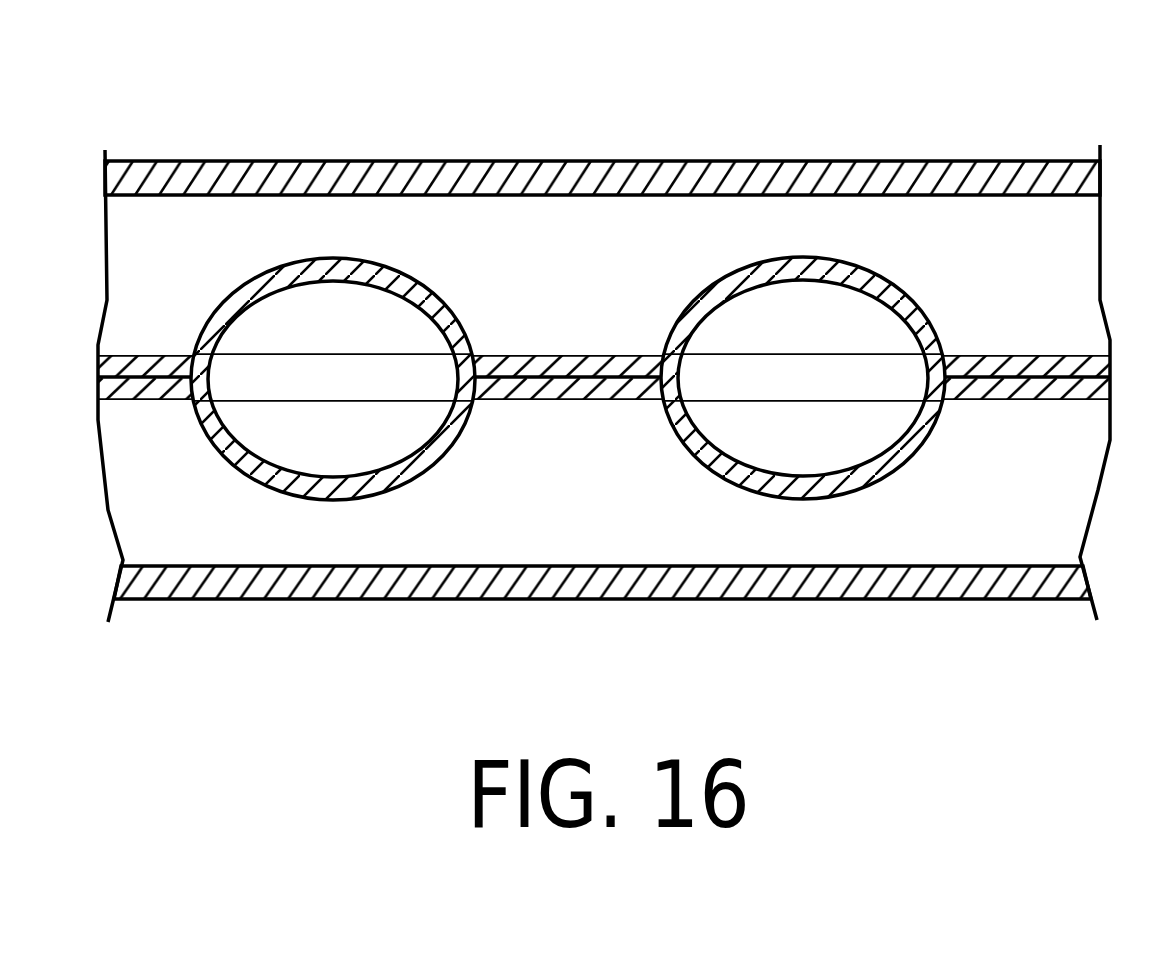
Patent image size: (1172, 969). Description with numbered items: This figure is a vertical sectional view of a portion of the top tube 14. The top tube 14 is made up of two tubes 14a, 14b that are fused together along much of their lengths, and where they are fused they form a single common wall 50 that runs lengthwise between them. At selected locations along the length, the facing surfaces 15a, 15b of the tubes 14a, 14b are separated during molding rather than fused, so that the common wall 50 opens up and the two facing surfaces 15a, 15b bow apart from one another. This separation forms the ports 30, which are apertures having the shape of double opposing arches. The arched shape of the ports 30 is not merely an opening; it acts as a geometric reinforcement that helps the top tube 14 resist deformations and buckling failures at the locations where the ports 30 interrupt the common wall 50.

The top tube 14 is at (968, 150).
The tube 14a is at (600, 161).
The tube 14b is at (950, 600).
The facing surface 15a is at (323, 284).
The facing surface 15b is at (340, 476).
The port 30 is at (396, 486).
The common wall 50 is at (133, 352).